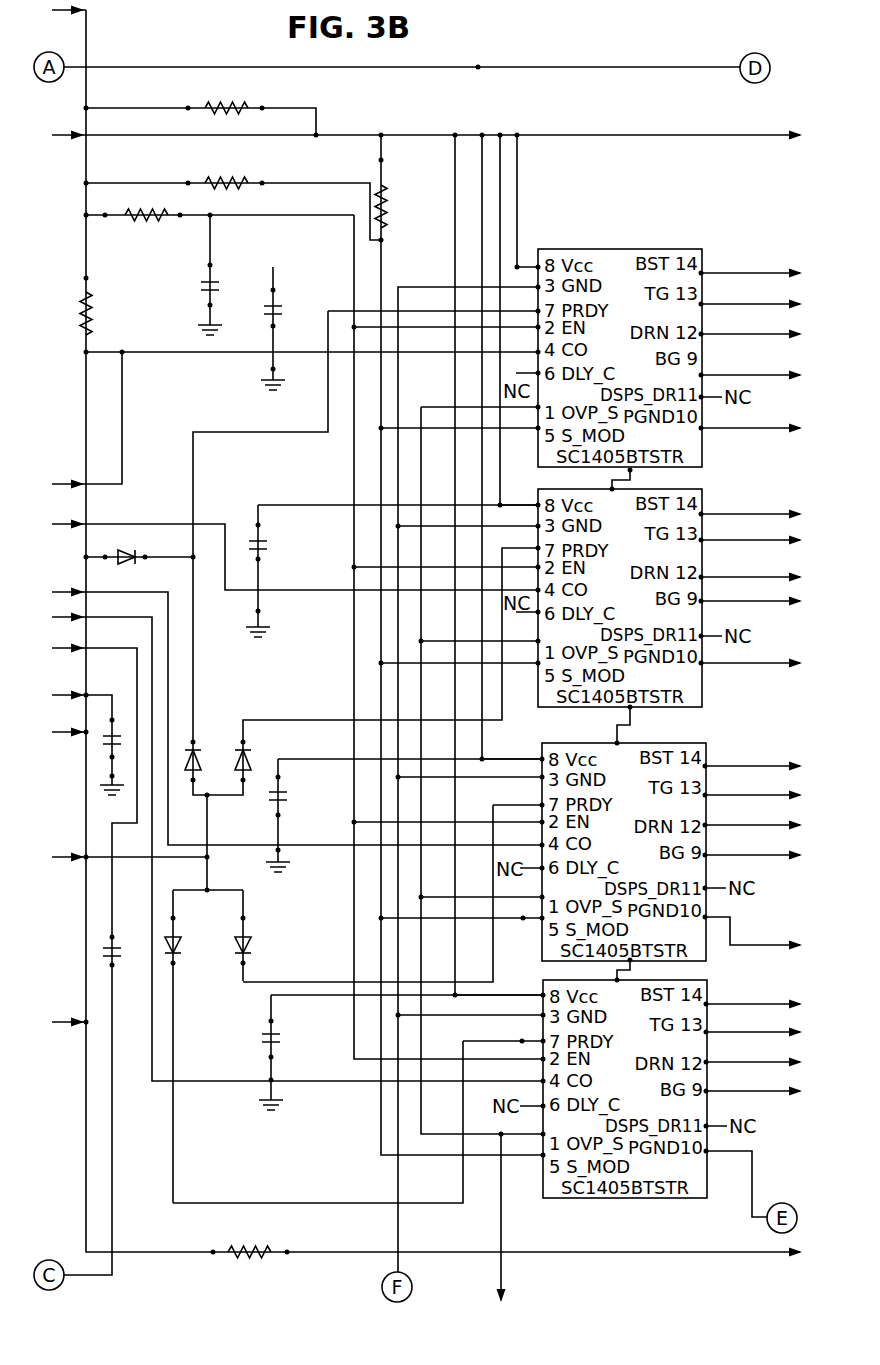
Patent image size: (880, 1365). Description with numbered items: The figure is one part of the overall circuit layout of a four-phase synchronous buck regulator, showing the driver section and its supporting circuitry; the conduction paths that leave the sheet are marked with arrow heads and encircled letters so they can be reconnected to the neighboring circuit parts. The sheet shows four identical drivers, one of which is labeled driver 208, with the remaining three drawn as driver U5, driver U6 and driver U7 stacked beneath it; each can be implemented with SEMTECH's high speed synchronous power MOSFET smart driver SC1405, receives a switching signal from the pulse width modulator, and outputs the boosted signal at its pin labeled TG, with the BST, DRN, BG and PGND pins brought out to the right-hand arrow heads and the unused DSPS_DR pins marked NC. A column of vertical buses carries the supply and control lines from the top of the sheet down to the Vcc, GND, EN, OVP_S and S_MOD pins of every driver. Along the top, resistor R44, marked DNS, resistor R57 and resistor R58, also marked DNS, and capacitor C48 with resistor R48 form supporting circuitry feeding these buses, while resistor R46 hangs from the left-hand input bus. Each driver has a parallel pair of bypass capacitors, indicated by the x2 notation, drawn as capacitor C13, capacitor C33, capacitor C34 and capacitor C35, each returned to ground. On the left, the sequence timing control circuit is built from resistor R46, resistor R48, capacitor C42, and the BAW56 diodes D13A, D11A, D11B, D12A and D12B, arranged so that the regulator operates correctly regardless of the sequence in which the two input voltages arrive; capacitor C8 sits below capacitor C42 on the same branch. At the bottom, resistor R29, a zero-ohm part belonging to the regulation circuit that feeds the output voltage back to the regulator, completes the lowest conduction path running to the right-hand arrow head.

The driver 208 is at (566, 249).
The switching regulator controller U5 is at (620, 587).
The switching regulator controller U6 is at (624, 840).
The switching regulator controller U7 is at (625, 1079).
The resistor R44 5.6k DNS R44 is at (201, 108).
The resistor R57 0 ohm R57 is at (233, 195).
The resistor R48 is at (220, 217).
The resistor R58 0 ohm DNS R58 is at (407, 217).
The resistor R46 is at (109, 313).
The resistor R29 is at (248, 1255).
The capacitor C48 1uF C48 is at (190, 275).
The capacitor C13 10uF x2 C13 is at (299, 328).
The capacitor C33 10uF x2 C33 is at (285, 569).
The capacitor C34 10uF x2 C34 is at (307, 815).
The capacitor C35 10uF x2 C35 is at (299, 1052).
The capacitor C42 is at (83, 731).
The capacitor C8 1uF 16v C8 is at (128, 991).
The diode D13A is at (139, 559).
The diode D11A is at (224, 766).
The diode D11B is at (275, 746).
The diode D12A is at (214, 900).
The diode D12B is at (274, 934).